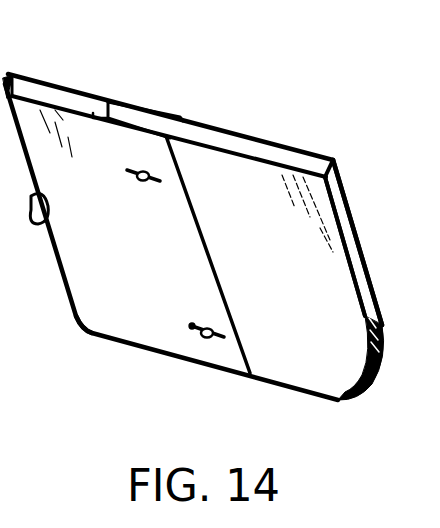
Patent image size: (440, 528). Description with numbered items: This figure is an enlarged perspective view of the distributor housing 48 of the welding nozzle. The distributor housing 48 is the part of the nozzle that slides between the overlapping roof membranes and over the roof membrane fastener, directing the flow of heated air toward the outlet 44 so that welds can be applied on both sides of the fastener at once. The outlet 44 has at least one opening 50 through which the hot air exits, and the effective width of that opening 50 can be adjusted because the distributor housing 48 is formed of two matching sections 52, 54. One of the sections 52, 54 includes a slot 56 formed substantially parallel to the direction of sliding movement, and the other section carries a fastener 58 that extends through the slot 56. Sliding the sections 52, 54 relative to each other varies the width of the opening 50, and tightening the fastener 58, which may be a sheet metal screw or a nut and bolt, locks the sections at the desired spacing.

The outlet 44 is at (290, 148).
The distributor housing 48 is at (334, 391).
The opening 50 is at (67, 100).
The matching section 52 is at (110, 307).
The matching section 54 is at (333, 279).
The slot 56 is at (195, 328).
The fastener 58 is at (207, 340).